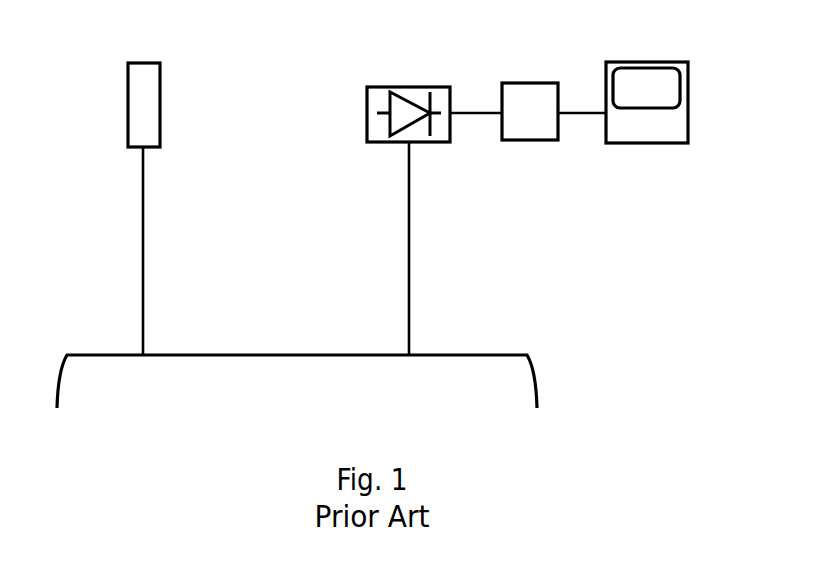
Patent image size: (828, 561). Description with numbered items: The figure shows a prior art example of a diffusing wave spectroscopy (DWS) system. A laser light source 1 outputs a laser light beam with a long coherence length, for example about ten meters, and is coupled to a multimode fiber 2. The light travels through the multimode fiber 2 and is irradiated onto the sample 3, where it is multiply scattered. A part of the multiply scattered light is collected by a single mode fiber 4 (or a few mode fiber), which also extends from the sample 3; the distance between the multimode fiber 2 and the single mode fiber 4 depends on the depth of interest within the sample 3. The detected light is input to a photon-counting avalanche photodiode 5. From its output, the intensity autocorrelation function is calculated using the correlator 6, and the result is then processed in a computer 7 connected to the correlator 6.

The laser light source 1 is at (125, 105).
The multimode fiber 2 is at (129, 251).
The sample 3 is at (297, 381).
The single mode fiber 4 is at (392, 248).
The photon-counting avalanche photodiode 5 is at (396, 114).
The correlator 6 is at (528, 92).
The computer 7 is at (647, 82).